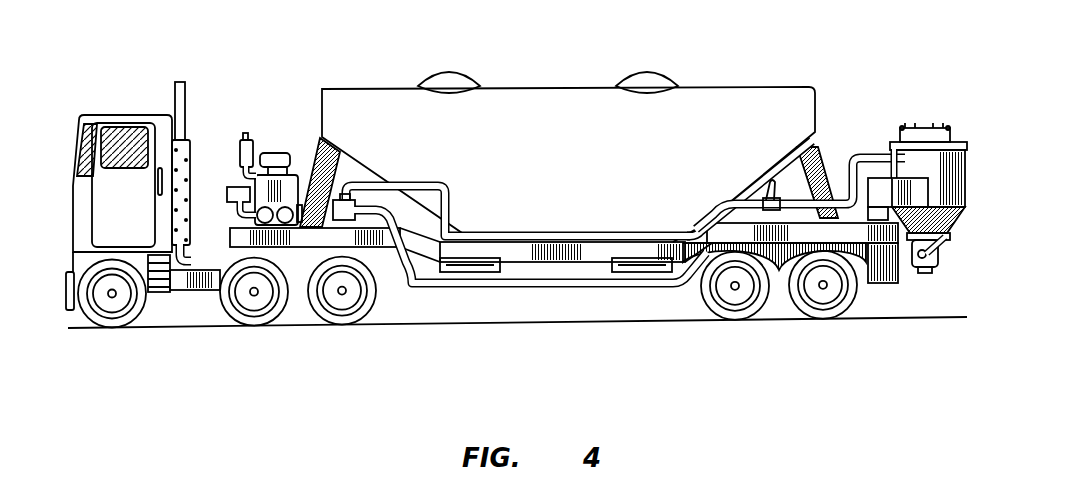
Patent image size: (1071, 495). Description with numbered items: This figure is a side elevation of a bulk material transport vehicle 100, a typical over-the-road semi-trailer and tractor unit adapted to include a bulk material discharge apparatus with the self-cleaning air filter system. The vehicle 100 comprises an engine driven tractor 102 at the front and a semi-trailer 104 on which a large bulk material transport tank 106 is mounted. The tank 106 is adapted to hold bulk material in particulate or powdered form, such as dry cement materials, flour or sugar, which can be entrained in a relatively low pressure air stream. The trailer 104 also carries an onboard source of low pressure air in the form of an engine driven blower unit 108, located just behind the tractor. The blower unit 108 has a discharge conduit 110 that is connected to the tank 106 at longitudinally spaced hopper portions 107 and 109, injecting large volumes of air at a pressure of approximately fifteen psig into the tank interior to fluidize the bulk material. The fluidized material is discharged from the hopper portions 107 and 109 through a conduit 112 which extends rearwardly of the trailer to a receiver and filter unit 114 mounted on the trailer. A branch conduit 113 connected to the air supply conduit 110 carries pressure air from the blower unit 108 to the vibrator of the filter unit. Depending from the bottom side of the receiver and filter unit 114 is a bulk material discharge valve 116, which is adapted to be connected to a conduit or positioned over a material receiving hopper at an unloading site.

The bulk material transport vehicle 100 is at (600, 66).
The engine driven tractor 102 is at (104, 114).
The semi-trailer 104 is at (352, 234).
The bulk material transport tank 106 is at (588, 235).
The hopper portion 107 is at (478, 274).
The engine driven blower unit 108 is at (268, 183).
The hopper portion 109 is at (655, 273).
The discharge conduit 110 is at (428, 288).
The conduit 112 is at (789, 154).
The branch conduit 113 is at (730, 205).
The receiver and filter unit 114 is at (972, 156).
The bulk material discharge valve 116 is at (939, 256).